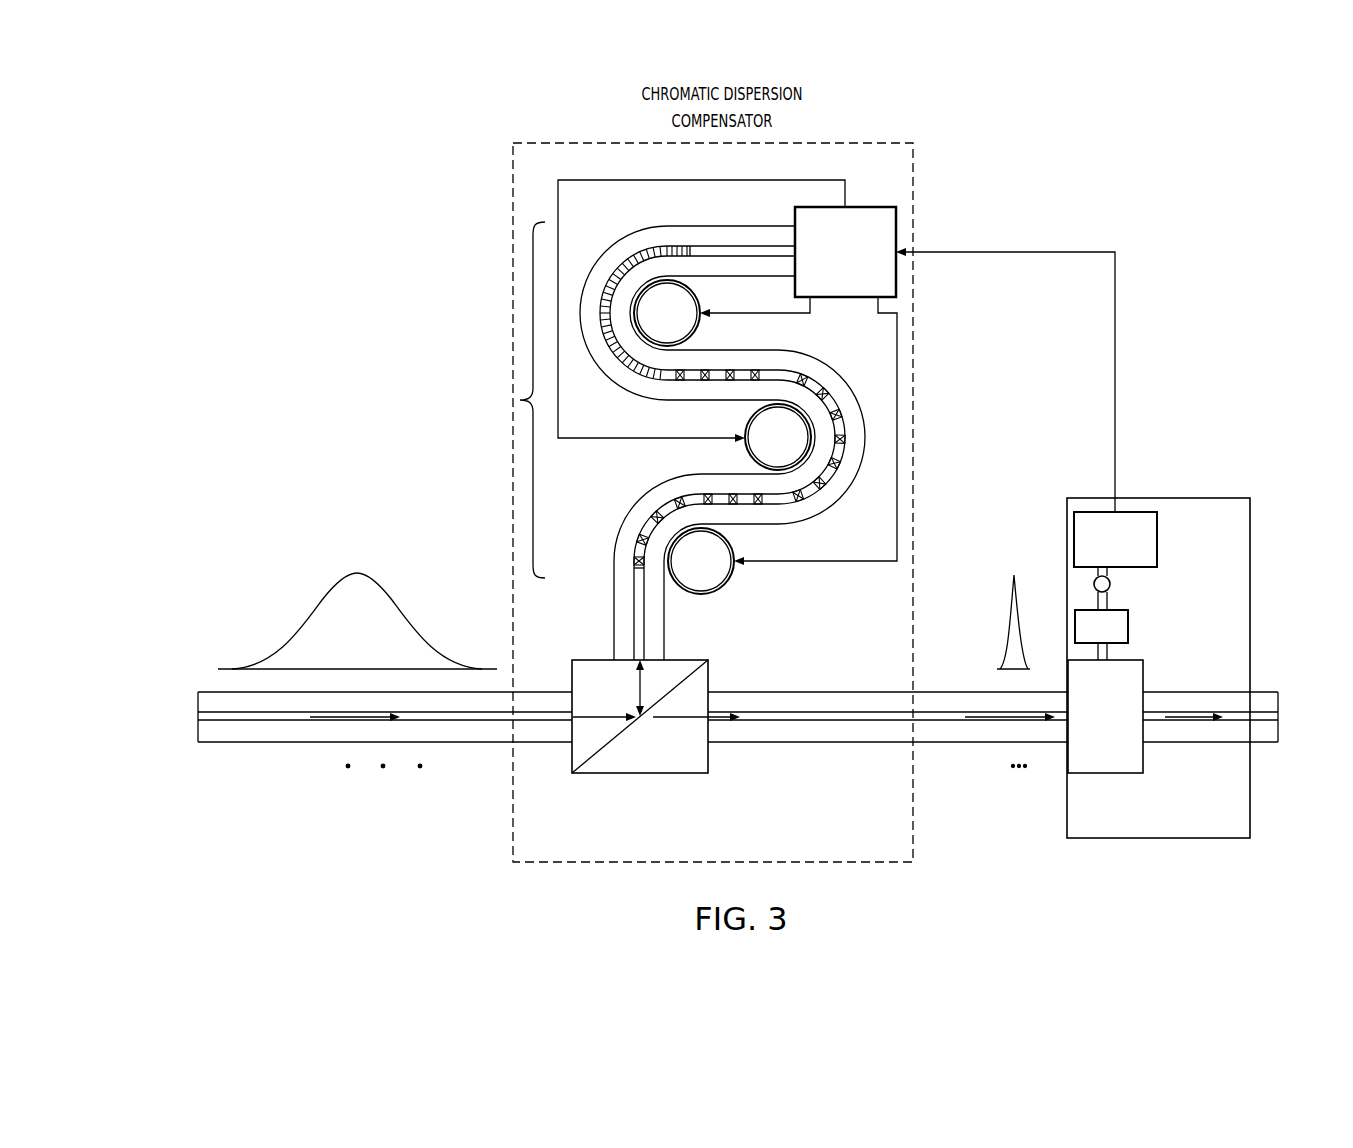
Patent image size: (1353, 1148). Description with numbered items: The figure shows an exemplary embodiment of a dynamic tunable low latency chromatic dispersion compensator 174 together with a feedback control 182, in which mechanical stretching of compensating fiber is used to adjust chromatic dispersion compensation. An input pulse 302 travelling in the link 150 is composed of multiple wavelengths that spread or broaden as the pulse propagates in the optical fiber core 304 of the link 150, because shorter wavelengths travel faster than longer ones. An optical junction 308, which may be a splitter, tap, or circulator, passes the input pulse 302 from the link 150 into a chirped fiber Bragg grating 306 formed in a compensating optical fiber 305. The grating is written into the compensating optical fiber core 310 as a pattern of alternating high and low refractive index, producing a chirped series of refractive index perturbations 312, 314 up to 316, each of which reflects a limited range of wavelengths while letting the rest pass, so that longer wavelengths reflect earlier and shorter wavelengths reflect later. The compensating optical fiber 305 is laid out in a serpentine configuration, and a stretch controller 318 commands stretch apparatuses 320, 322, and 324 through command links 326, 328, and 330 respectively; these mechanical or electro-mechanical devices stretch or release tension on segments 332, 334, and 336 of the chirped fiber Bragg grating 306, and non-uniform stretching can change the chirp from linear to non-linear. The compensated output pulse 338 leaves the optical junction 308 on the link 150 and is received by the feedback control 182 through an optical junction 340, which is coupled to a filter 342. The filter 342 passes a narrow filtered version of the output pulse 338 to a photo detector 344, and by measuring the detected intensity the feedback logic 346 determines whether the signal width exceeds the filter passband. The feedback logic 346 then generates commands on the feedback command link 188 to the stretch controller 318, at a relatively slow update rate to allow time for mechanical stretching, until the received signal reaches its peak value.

The link 150 is at (198, 700).
The chromatic dispersion compensator 174 is at (913, 190).
The feedback control 182 is at (1161, 640).
The feedback command link 188 is at (1035, 252).
The input pulse 302 is at (313, 612).
The optical fiber core 304 is at (198, 718).
The compensating optical fiber 305 is at (613, 647).
The chirped fiber Bragg grating 306 is at (706, 427).
The optical junction 308 is at (708, 760).
The compensating optical fiber core 310 is at (634, 620).
The refractive index perturbation 312 is at (634, 566).
The refractive index perturbation 314 is at (641, 535).
The refractive index perturbation 316 is at (690, 245).
The stretch controller 318 is at (866, 207).
The stretch apparatus 320 is at (683, 575).
The stretch apparatus 322 is at (760, 451).
The stretch apparatus 324 is at (649, 327).
The command link 326 is at (898, 412).
The command link 328 is at (749, 180).
The command link 330 is at (783, 312).
The segment 332 is at (641, 497).
The segment 334 is at (868, 452).
The segment 336 is at (606, 250).
The output pulse 338 is at (1005, 634).
The optical junction 340 is at (1108, 773).
The filter 342 is at (1128, 632).
The photo detector 344 is at (1110, 590).
The feedback logic 346 is at (1157, 543).